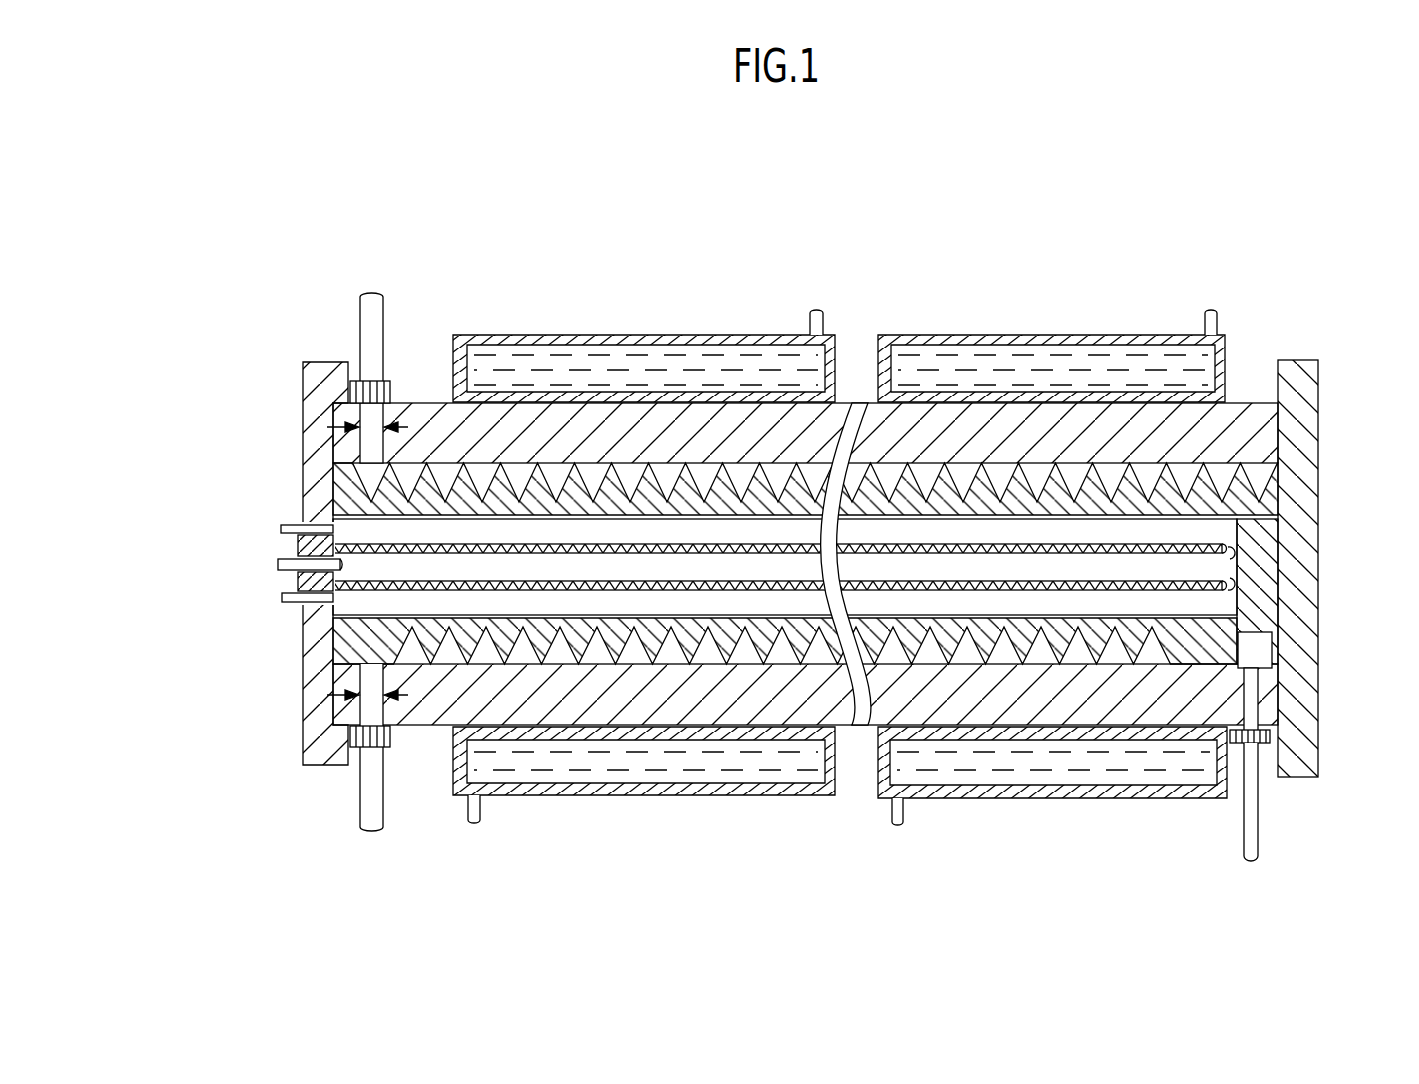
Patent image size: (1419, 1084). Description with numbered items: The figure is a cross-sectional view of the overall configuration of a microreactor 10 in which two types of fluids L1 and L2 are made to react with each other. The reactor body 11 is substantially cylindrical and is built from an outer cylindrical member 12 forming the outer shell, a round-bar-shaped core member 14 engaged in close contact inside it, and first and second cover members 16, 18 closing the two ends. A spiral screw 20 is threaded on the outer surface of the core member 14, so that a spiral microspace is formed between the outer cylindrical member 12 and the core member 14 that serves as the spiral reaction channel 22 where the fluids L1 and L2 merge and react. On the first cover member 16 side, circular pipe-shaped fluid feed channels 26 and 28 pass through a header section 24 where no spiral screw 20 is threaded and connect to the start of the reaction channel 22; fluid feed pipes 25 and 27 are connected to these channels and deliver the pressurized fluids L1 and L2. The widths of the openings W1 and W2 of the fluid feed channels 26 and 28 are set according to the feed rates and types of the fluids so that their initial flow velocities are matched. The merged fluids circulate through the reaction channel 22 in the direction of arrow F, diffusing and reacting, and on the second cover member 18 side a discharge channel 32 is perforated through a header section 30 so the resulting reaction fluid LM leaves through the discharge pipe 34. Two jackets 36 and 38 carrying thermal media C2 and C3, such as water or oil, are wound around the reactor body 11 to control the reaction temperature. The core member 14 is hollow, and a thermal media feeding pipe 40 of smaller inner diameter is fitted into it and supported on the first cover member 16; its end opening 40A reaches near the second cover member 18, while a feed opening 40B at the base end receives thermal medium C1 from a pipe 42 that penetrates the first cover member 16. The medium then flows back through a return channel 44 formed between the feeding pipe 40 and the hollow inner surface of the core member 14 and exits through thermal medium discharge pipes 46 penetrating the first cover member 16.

The microreactor 10 is at (978, 220).
The reactor body 11 is at (787, 727).
The outer cylindrical member 12 is at (650, 720).
The core member 14 is at (752, 645).
The first cover member 16 is at (323, 370).
The second cover member 18 is at (1284, 367).
The spiral screw 20 is at (1063, 640).
The reaction channel 22 is at (553, 658).
The header section 24 is at (333, 427).
The fluid feed pipe 25 is at (373, 318).
The fluid feed channel 26 is at (360, 443).
The fluid feed pipe 27 is at (386, 778).
The fluid feed channel 28 is at (367, 681).
The header section 30 is at (1250, 653).
The discharge channel 32 is at (1255, 710).
The discharge pipe 34 is at (1260, 827).
The jacket 36 is at (573, 335).
The jacket 38 is at (1067, 338).
The thermal media feeding pipe 40 is at (1137, 590).
The end opening 40A is at (1222, 562).
The feed opening 40B is at (335, 544).
The pipe 42 is at (290, 564).
The return channel 44 is at (938, 530).
The thermal medium discharge pipes 46 is at (357, 480).
The thermal medium C1 is at (267, 530).
The thermal medium C2 is at (817, 268).
The thermal medium C3 is at (1210, 268).
The fluid L1 is at (372, 250).
The fluid L2 is at (372, 868).
The width of opening W1 is at (383, 397).
The width of opening W2 is at (363, 747).
The arrow F is at (705, 928).
The reaction fluid LM is at (1250, 870).